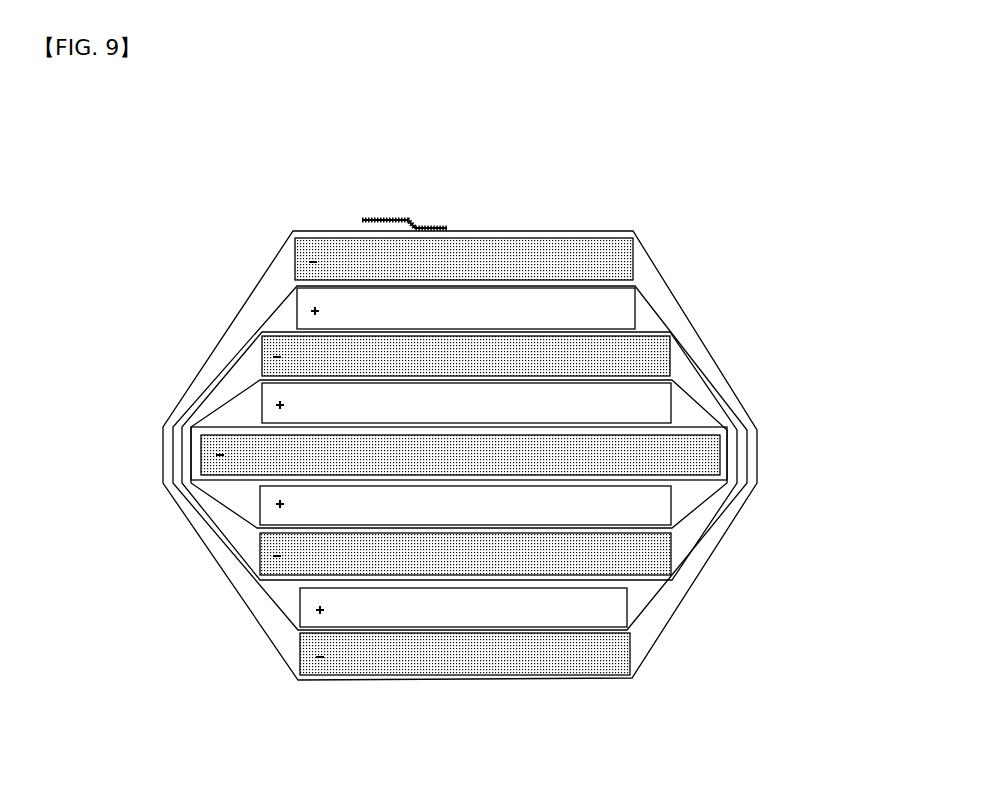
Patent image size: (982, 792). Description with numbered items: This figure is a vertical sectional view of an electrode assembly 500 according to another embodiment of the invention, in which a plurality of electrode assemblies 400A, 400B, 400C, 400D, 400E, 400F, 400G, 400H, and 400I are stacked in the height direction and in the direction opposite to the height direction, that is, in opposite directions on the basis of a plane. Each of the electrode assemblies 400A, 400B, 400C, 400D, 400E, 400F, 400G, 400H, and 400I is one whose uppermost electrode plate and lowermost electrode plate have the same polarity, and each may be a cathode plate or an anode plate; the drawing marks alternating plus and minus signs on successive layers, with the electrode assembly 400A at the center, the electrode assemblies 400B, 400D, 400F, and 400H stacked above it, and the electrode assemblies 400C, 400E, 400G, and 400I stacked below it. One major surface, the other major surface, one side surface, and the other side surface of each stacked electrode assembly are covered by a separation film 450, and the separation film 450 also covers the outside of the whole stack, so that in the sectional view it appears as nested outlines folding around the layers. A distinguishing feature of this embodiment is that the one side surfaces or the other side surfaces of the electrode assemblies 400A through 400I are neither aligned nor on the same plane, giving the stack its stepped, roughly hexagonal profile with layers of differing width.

The electrode assembly 500 is at (108, 156).
The separation film 450 is at (506, 455).
The electrode assembly 400A is at (371, 455).
The electrode assembly 400B is at (365, 403).
The electrode assembly 400C is at (365, 505).
The electrode assembly 400D is at (369, 356).
The electrode assembly 400E is at (365, 554).
The electrode assembly 400F is at (351, 309).
The electrode assembly 400G is at (343, 607).
The electrode assembly 400H is at (350, 259).
The electrode assembly 400I is at (350, 654).